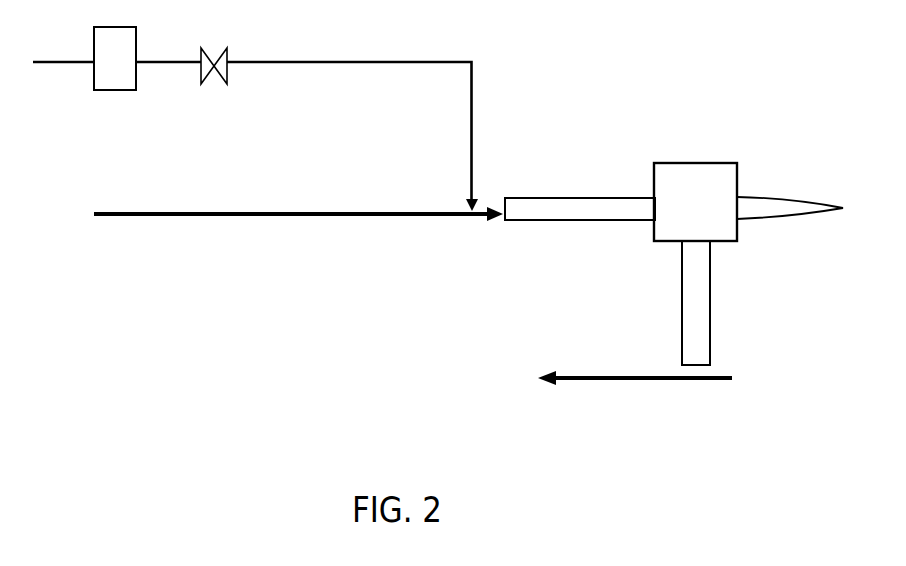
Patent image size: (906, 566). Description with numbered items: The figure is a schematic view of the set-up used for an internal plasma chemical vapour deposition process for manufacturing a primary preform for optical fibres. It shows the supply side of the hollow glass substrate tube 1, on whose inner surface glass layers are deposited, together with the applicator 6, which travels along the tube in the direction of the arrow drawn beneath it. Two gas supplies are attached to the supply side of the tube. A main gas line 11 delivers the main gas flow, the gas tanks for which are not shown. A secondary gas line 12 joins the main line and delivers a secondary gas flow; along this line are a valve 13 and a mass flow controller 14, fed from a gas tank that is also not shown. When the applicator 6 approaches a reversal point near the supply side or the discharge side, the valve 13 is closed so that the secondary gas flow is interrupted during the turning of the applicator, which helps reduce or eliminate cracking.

The hollow glass substrate tube 1 is at (674, 247).
The applicator 6 is at (695, 202).
The main gas line 11 is at (245, 224).
The secondary gas line 12 is at (371, 56).
The valve 13 is at (214, 54).
The mass flow controller 14 is at (115, 58).